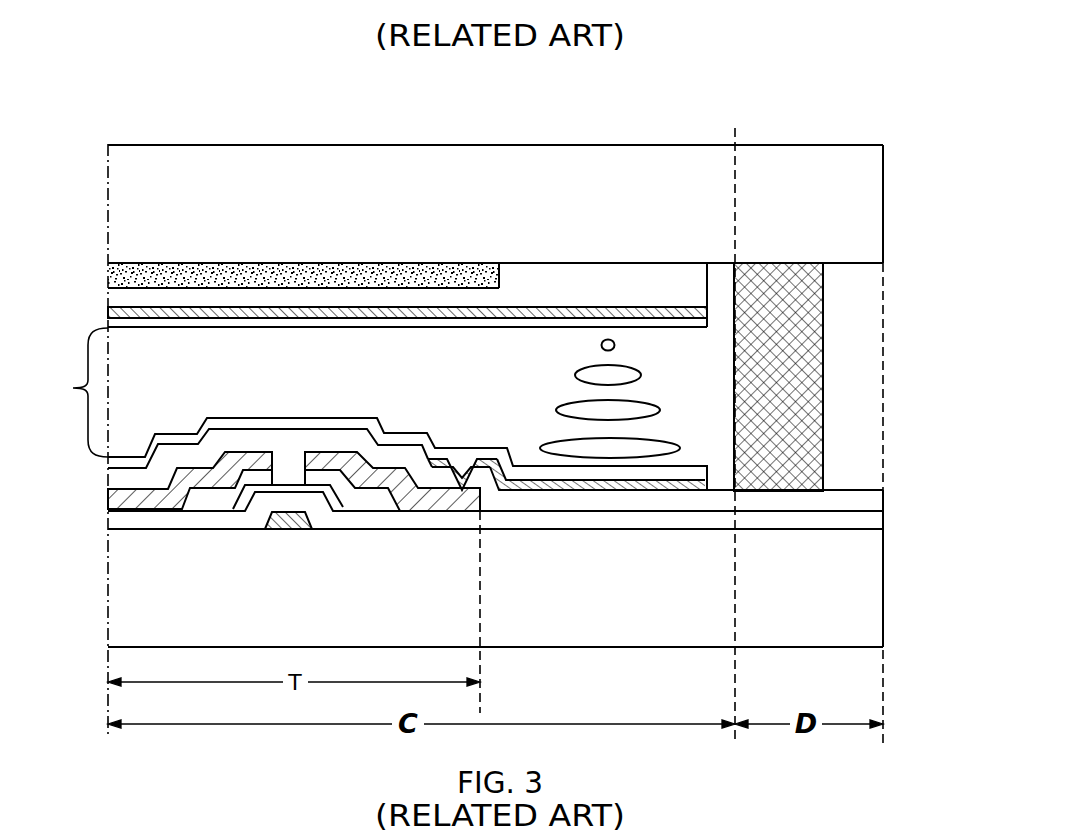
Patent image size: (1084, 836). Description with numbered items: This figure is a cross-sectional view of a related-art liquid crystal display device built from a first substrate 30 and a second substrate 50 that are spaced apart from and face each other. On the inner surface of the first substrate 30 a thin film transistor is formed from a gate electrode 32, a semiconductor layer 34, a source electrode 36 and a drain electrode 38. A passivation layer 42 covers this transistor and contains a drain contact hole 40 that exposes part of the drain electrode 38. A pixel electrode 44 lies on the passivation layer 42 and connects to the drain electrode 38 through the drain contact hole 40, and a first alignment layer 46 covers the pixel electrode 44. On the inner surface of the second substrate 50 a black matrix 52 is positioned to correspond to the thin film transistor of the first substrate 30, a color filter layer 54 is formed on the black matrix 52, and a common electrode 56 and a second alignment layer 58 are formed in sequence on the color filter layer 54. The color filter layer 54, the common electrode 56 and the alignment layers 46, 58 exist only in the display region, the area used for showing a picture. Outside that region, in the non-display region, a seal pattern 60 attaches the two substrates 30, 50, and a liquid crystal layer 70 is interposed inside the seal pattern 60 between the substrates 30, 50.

The first substrate 30 is at (158, 595).
The gate electrode 32 is at (287, 530).
The semiconductor layer 34 is at (380, 495).
The source electrode 36 is at (252, 452).
The drain electrode 38 is at (330, 450).
The drain contact hole 40 is at (460, 427).
The passivation layer 42 is at (531, 492).
The pixel electrode 44 is at (470, 456).
The first alignment layer 46 is at (393, 430).
The second substrate 50 is at (172, 203).
The black matrix 52 is at (387, 268).
The color filter layer 54 is at (592, 272).
The common electrode 56 is at (437, 324).
The second alignment layer 58 is at (540, 330).
The seal pattern 60 is at (823, 350).
The liquid crystal layer 70 is at (73, 388).